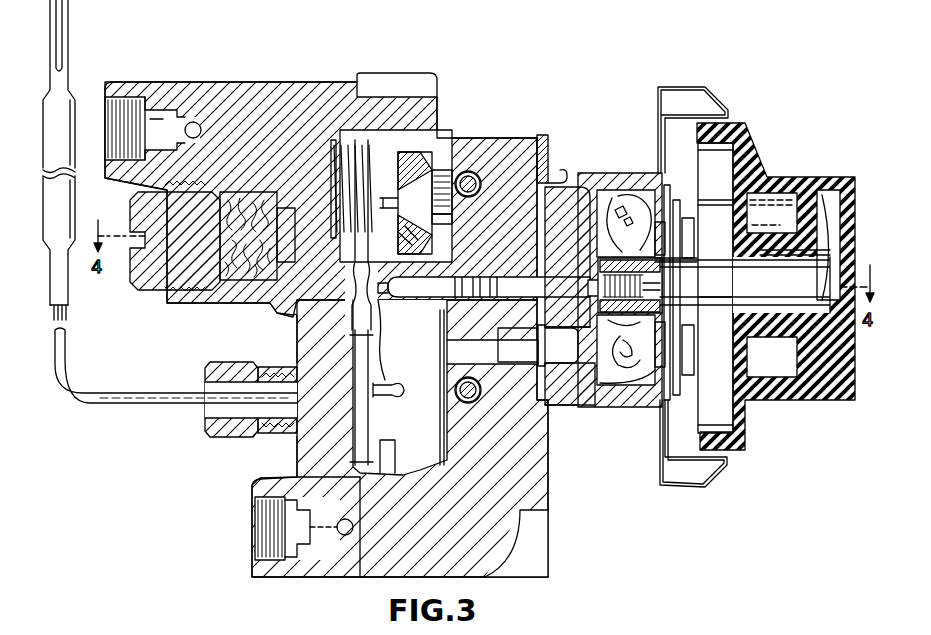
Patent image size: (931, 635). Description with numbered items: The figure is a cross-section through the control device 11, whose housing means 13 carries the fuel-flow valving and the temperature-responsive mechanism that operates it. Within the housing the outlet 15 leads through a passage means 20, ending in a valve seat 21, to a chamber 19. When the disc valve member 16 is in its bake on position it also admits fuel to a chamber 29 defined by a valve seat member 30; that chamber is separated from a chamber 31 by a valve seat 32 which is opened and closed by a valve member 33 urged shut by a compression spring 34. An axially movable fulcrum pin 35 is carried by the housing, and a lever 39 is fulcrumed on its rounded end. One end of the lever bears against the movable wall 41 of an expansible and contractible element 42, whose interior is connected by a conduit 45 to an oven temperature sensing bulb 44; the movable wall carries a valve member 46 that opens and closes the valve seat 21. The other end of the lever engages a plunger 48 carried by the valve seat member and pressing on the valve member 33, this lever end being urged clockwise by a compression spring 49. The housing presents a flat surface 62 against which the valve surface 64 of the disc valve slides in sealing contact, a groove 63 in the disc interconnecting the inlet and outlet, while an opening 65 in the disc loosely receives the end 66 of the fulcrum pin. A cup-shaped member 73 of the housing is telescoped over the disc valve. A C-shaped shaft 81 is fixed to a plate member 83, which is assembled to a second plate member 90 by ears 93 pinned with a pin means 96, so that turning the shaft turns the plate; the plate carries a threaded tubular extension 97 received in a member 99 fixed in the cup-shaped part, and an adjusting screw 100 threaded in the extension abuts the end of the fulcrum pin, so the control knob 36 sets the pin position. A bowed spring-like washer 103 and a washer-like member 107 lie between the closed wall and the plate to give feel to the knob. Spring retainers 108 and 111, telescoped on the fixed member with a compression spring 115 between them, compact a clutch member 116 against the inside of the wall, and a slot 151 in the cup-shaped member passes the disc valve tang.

The control device 11 is at (336, 64).
The housing means 13 is at (551, 470).
The outlet 15 is at (526, 368).
The disc valve member 16 is at (578, 388).
The chamber 19 is at (366, 299).
The passage means 20 is at (482, 362).
The valve seat 21 is at (452, 450).
The chamber 29 is at (404, 238).
The valve seat member 30 is at (412, 162).
The chamber 31 is at (437, 218).
The valve seat 32 is at (448, 214).
The valve member 33 is at (436, 188).
The compression spring 34 is at (466, 172).
The fulcrum pin 35 is at (446, 318).
The control knob 36 is at (819, 178).
The lever 39 is at (392, 263).
The movable wall 41 is at (395, 384).
The expansible and contractible element 42 is at (356, 341).
The oven temperature sensing bulb 44 is at (64, 203).
The conduit 45 is at (130, 408).
The valve member 46 is at (438, 453).
The plunger 48 is at (396, 177).
The compression spring 49 is at (342, 197).
The flat surface 62 is at (567, 257).
The groove 63 is at (578, 412).
The valve surface 64 is at (540, 209).
The opening 65 is at (585, 257).
The end of the fulcrum pin 66 is at (572, 286).
The cup-shaped member 73 is at (622, 400).
The C-shaped shaft 81 is at (794, 250).
The plate member 83 is at (690, 345).
The plate member 90 is at (690, 333).
The ears 93 is at (688, 240).
The pin means 96 is at (690, 226).
The tubular extension 97 is at (662, 262).
The member 99 is at (615, 221).
The adjusting screw 100 is at (630, 276).
The bowed spring-like washer 103 is at (656, 200).
The washer-like member 107 is at (677, 222).
The spring retainer 108 is at (627, 324).
The spring retainer 111 is at (660, 358).
The compression spring 115 is at (618, 357).
The clutch member 116 is at (622, 382).
The slot 151 is at (578, 186).